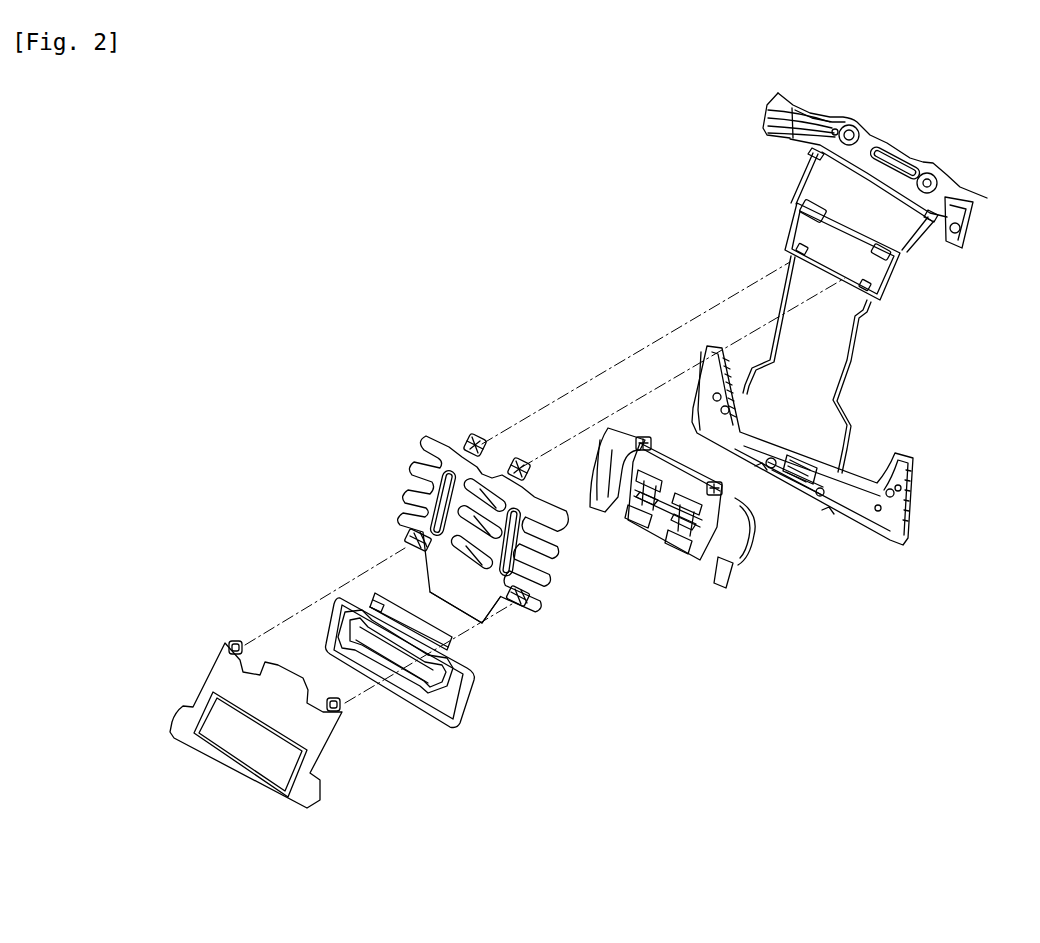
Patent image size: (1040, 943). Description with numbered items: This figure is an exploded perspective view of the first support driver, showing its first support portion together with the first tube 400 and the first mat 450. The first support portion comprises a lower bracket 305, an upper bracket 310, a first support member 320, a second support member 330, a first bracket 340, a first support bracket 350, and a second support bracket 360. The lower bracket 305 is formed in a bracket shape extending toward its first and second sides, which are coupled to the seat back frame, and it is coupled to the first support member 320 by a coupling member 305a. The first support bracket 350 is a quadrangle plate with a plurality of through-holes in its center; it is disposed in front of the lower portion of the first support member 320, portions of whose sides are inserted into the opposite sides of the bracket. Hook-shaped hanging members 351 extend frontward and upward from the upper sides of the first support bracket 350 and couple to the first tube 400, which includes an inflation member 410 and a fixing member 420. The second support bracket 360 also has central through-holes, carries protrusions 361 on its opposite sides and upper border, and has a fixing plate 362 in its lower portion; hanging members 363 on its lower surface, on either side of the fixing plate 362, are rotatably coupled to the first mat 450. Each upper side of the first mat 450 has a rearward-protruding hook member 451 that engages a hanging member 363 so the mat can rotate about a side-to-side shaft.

The lower bracket 305 is at (912, 498).
The coupling member 305a is at (795, 460).
The upper bracket 310 is at (966, 190).
The first support member 320 is at (848, 360).
The second support member 330 is at (803, 174).
The first bracket 340 is at (785, 222).
The first support bracket 350 is at (722, 575).
The hanging members 351 is at (655, 427).
The second support bracket 360 is at (440, 493).
The protrusions 361 is at (478, 436).
The fixing plate 362 is at (480, 605).
The hanging members 363 is at (406, 543).
The first tube 400 is at (462, 706).
The inflation member 410 is at (435, 718).
The fixing member 420 is at (410, 618).
The first mat 450 is at (289, 684).
The hook member 451 is at (235, 640).